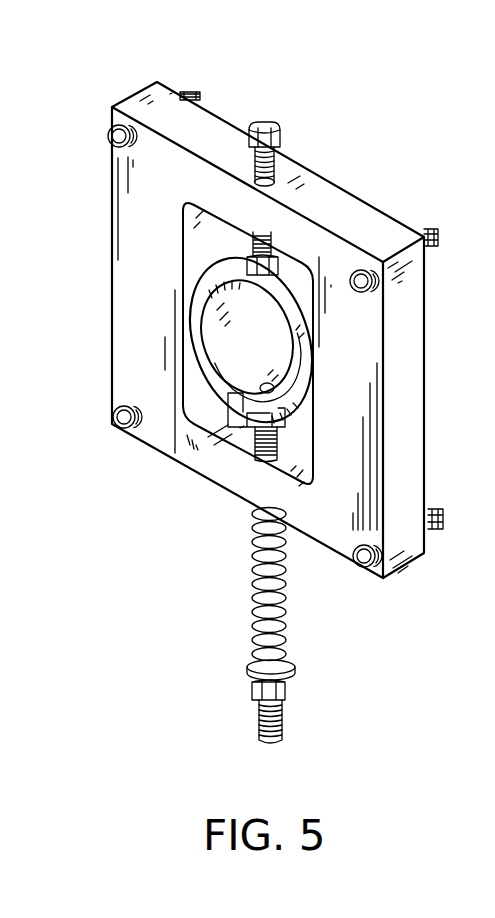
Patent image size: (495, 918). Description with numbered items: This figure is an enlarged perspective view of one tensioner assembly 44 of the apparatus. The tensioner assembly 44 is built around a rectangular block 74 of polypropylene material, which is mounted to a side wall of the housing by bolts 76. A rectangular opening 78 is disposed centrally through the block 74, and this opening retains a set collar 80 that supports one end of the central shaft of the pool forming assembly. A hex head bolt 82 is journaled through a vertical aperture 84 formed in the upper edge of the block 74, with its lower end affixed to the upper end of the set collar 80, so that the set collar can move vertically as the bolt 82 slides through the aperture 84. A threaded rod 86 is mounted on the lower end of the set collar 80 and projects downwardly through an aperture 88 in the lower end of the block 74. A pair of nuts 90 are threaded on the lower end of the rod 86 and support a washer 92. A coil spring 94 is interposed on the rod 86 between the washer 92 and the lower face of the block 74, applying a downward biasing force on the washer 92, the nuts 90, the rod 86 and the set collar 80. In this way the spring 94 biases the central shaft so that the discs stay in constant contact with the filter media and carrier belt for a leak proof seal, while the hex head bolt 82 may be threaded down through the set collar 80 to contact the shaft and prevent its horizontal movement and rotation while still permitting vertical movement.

The tensioner assembly 44 is at (415, 423).
The rectangular block 74 is at (412, 358).
The bolts 76 is at (110, 135).
The rectangular opening 78 is at (205, 227).
The set collar 80 is at (177, 310).
The hex head bolt 82 is at (265, 118).
The vertical aperture 84 is at (285, 173).
The threaded rod 86 is at (285, 720).
The aperture 88 is at (250, 460).
The nuts 90 is at (252, 690).
The washer 92 is at (247, 665).
The coil spring 94 is at (252, 568).